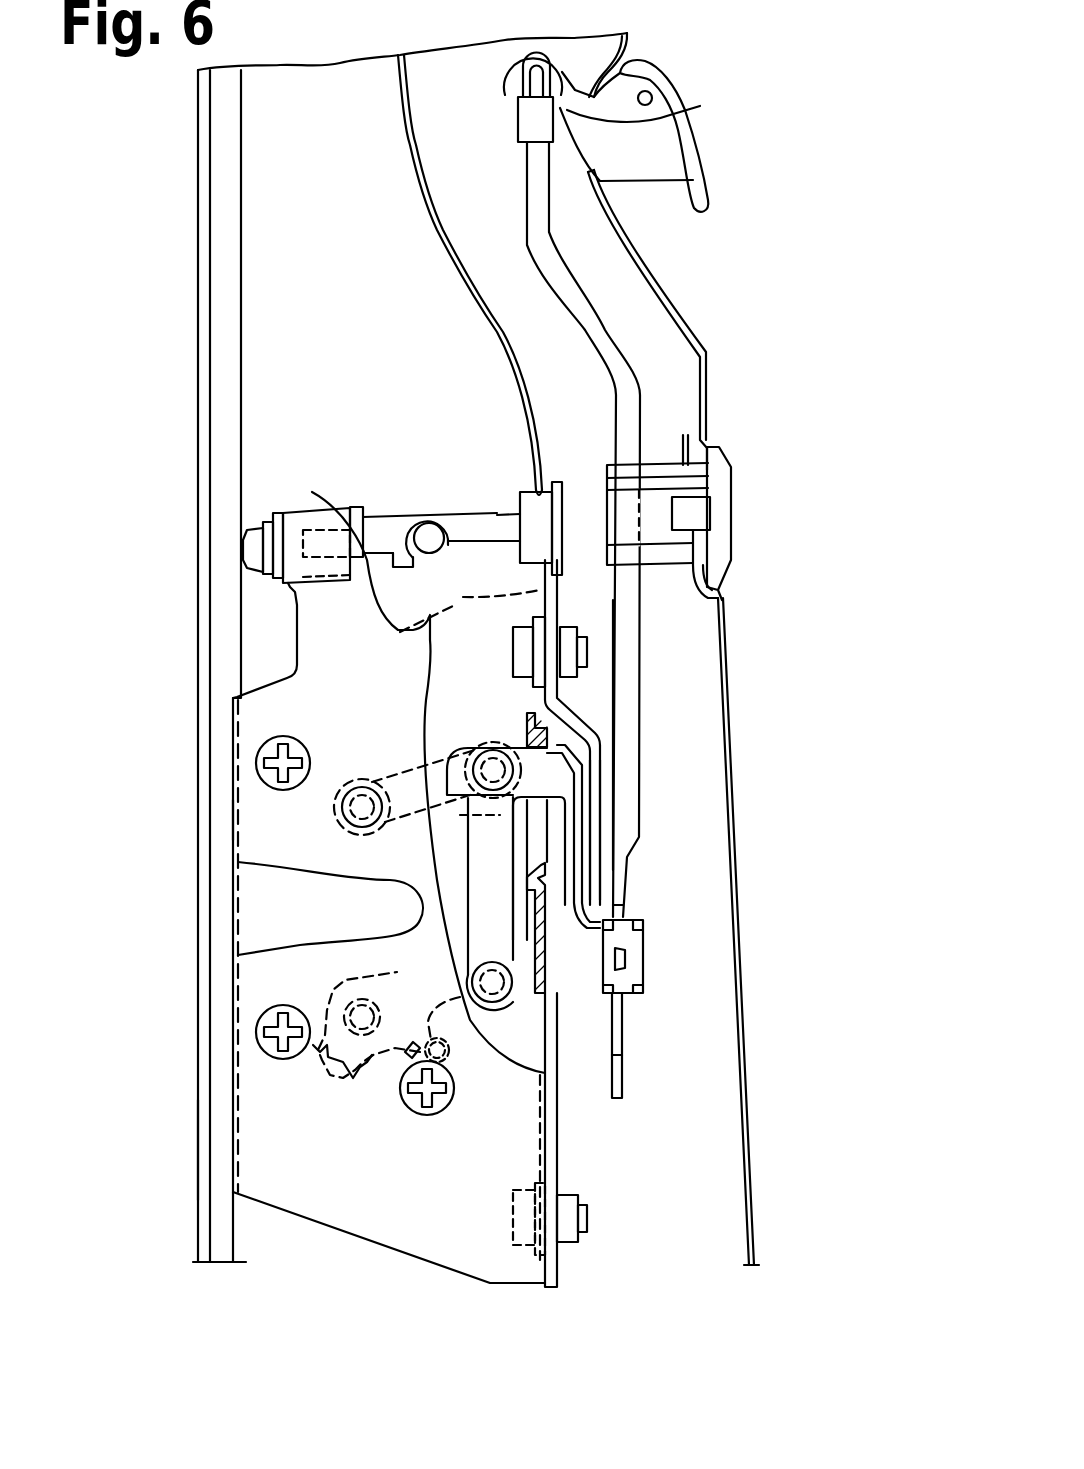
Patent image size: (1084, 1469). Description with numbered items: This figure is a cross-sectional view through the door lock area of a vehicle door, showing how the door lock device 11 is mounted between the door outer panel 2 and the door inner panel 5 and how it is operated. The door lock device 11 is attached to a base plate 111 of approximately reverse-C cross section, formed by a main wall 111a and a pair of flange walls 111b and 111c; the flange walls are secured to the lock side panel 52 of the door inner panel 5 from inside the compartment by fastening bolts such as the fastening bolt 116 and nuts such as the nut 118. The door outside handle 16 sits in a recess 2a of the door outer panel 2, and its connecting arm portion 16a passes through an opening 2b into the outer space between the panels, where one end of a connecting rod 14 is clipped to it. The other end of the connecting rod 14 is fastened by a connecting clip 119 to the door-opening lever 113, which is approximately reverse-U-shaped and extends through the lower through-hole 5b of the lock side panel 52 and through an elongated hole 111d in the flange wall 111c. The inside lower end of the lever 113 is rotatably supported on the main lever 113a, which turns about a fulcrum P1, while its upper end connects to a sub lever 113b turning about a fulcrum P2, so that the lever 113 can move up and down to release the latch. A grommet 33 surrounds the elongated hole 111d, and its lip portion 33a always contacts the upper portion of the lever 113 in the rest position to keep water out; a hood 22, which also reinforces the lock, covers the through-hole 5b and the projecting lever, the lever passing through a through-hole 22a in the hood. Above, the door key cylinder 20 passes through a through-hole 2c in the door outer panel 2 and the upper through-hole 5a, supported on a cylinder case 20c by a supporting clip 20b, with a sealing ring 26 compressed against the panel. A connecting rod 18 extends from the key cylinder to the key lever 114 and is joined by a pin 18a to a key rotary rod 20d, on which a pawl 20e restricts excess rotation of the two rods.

The door outer panel 2 is at (700, 362).
The recess 2a is at (647, 307).
The opening 2b is at (597, 178).
The through-hole 2c is at (712, 470).
The door inner panel 5 is at (478, 318).
The through-hole 5a is at (533, 493).
The through-hole 5b is at (602, 727).
The door lock device 11 is at (233, 1030).
The connecting rod 14 is at (627, 685).
The door outside handle 16 is at (700, 147).
The connecting arm portion 16a is at (660, 108).
The connecting rod 18 is at (385, 517).
The pin 18a is at (428, 522).
The door key cylinder 20 is at (732, 500).
The supporting clip 20b is at (722, 592).
The cylinder case 20c is at (657, 460).
The key rotary rod 20d is at (497, 527).
The pawl 20e is at (425, 560).
The hood 22 is at (553, 614).
The through-hole 22a is at (600, 913).
The sealing ring 26 is at (557, 482).
The grommet 33 is at (528, 720).
The lip portion 33a is at (565, 748).
The lock side panel 52 is at (559, 1264).
The base plate 111 is at (233, 730).
The main wall 111a is at (258, 1131).
The flange wall 111b is at (250, 818).
The flange wall 111c is at (472, 598).
The elongated hole 111d is at (546, 900).
The door-opening lever 113 is at (643, 965).
The main lever 113a is at (397, 972).
The sub lever 113b is at (398, 772).
The key lever 114 is at (340, 508).
The fastening bolt 116 is at (430, 650).
The nut 118 is at (573, 652).
The connecting clip 119 is at (645, 928).
The fulcrum P1 is at (365, 1022).
The fulcrum P2 is at (350, 812).